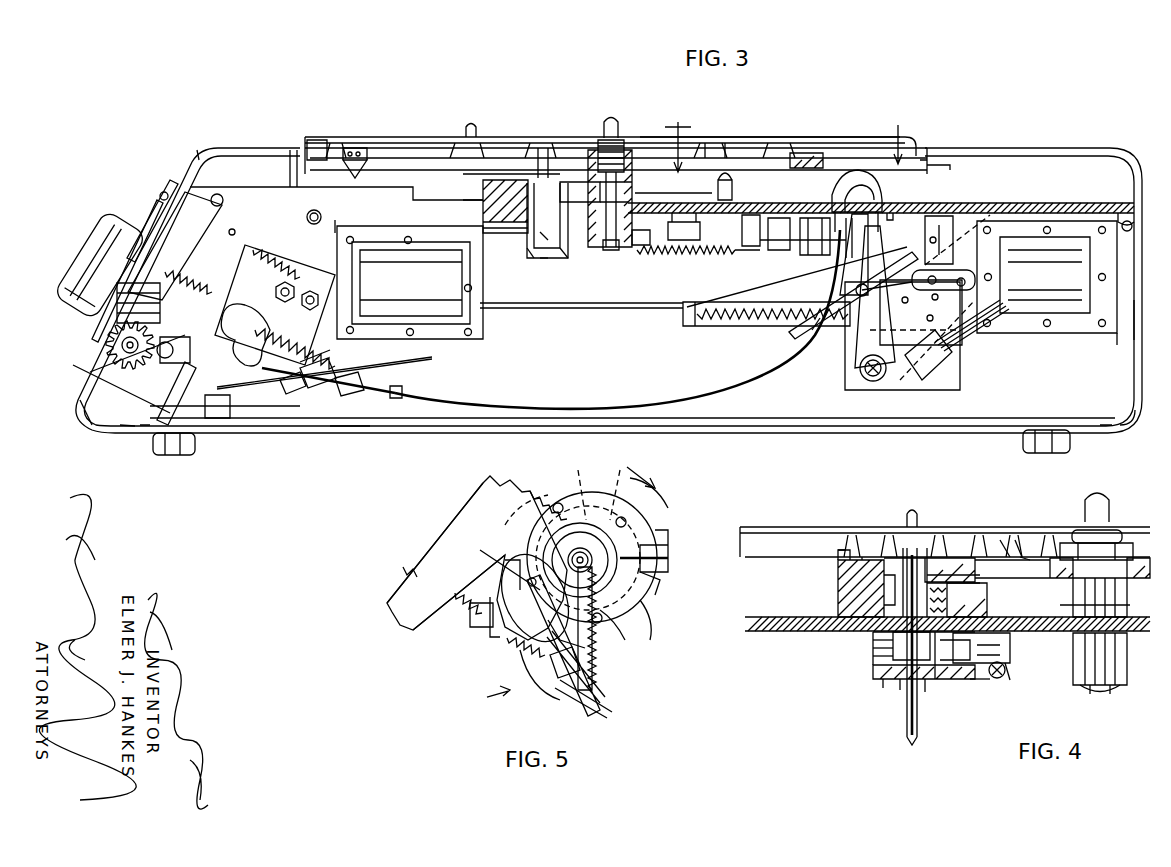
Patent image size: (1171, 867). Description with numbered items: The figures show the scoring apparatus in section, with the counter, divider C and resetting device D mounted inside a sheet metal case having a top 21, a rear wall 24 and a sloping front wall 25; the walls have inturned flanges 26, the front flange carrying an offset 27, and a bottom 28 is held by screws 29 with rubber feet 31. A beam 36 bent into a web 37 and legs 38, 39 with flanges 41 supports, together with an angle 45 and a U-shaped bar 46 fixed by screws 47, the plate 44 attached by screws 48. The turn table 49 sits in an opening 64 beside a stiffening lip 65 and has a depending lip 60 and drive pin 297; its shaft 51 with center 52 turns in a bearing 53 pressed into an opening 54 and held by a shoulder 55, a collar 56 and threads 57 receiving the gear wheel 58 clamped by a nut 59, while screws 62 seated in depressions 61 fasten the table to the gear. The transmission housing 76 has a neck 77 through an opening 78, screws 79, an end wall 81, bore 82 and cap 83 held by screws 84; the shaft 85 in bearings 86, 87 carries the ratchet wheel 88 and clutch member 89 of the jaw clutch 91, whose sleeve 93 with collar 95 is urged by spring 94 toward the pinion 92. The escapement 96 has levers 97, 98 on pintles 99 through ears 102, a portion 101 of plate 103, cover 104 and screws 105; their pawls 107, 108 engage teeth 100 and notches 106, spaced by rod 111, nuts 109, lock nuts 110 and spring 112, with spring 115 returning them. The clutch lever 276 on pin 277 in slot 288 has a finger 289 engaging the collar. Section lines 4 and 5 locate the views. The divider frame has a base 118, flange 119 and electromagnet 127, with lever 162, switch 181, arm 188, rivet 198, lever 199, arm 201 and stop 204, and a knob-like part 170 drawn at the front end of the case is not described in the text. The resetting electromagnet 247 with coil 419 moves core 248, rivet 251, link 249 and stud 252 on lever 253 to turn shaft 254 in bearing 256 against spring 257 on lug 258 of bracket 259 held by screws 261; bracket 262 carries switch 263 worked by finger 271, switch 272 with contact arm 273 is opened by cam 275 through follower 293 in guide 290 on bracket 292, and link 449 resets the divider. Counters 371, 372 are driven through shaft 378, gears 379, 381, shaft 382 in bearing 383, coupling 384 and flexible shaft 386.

In FIG. 3, the top 21 is at (233, 147).
In FIG. 3, the rear wall 24 is at (1142, 330).
In FIG. 3, the front wall 25 is at (147, 224).
In FIG. 3, the inturned flanges 26 is at (140, 431).
In FIG. 3, the offset 27 is at (80, 422).
In FIG. 3, the bottom 28 is at (346, 433).
In FIG. 3, the screws 29 is at (125, 433).
In FIG. 3, the rubber feet 31 is at (172, 450).
In FIG. 3, the beam 36 is at (566, 256).
In FIG. 3, the web 37 is at (556, 260).
In FIG. 3, the leg 38 is at (514, 155).
In FIG. 3, the leg 39 is at (541, 160).
In FIG. 3, the flanges 41 is at (488, 178).
In FIG. 3, the plate 44 is at (1040, 206).
In FIG. 4, the plate 44 is at (750, 632).
In FIG. 3, the angle 45 is at (1128, 232).
In FIG. 3, the U-shaped bar 46 is at (527, 258).
In FIG. 3, the screws 47 is at (541, 261).
In FIG. 3, the screws 48 is at (1123, 212).
In FIG. 3, the turn table 49 is at (790, 137).
In FIG. 4, the turn table 49 is at (770, 527).
In FIG. 4, the shaft 51 is at (1080, 660).
In FIG. 3, the center 52 is at (611, 118).
In FIG. 4, the center 52 is at (1100, 496).
In FIG. 3, the bearing 53 is at (604, 240).
In FIG. 4, the bearing 53 is at (1116, 684).
In FIG. 3, the opening 54 is at (634, 245).
In FIG. 4, the opening 54 is at (1070, 620).
In FIG. 3, the shoulder 55 is at (598, 191).
In FIG. 4, the shoulder 55 is at (1076, 604).
In FIG. 4, the collar 56 is at (1030, 558).
In FIG. 3, the threads 57 is at (622, 158).
In FIG. 4, the threads 57 is at (1085, 545).
In FIG. 3, the gear wheel 58 is at (418, 158).
In FIG. 5, the gear wheel 58 is at (518, 484).
In FIG. 4, the gear wheel 58 is at (990, 565).
In FIG. 3, the nut 59 is at (592, 150).
In FIG. 4, the nut 59 is at (1112, 540).
In FIG. 3, the lip 60 is at (318, 137).
In FIG. 4, the depressions 61 is at (1006, 548).
In FIG. 4, the screws 62 is at (1020, 548).
In FIG. 3, the opening 64 is at (926, 150).
In FIG. 3, the lip 65 is at (300, 150).
In FIG. 4, the housing 76 is at (838, 590).
In FIG. 4, the neck 77 is at (880, 664).
In FIG. 4, the opening 78 is at (874, 645).
In FIG. 4, the screws 79 is at (877, 652).
In FIG. 4, the end wall 81 is at (884, 686).
In FIG. 4, the bore 82 is at (848, 600).
In FIG. 5, the cap 83 is at (592, 490).
In FIG. 4, the cap 83 is at (864, 548).
In FIG. 4, the screws 84 is at (840, 550).
In FIG. 4, the shaft 85 is at (898, 684).
In FIG. 4, the bearing 86 is at (945, 668).
In FIG. 4, the bearing 87 is at (903, 548).
In FIG. 5, the ratchet wheel 88 is at (563, 484).
In FIG. 4, the ratchet wheel 88 is at (937, 688).
In FIG. 4, the member 89 is at (976, 591).
In FIG. 4, the jaw clutch 91 is at (968, 576).
In FIG. 5, the pinion 92 is at (610, 622).
In FIG. 4, the pinion 92 is at (940, 558).
In FIG. 4, the sleeve 93 is at (976, 606).
In FIG. 4, the compression coil spring 94 is at (872, 632).
In FIG. 3, the collar 95 is at (848, 172).
In FIG. 4, the collar 95 is at (848, 566).
In FIG. 5, the escapement 96 is at (455, 594).
In FIG. 4, the escapement 96 is at (1000, 682).
In FIG. 5, the lever 97 is at (506, 576).
In FIG. 5, the lever 98 is at (572, 652).
In FIG. 4, the lever 98 is at (1005, 672).
In FIG. 5, the pintles 99 is at (515, 560).
In FIG. 4, the pintles 99 is at (1008, 656).
In FIG. 5, the ratchet teeth 100 is at (658, 546).
In FIG. 4, the portion 101 is at (978, 683).
In FIG. 5, the ears 102 is at (510, 642).
In FIG. 4, the ears 102 is at (980, 650).
In FIG. 4, the plate 103 is at (880, 679).
In FIG. 4, the cover 104 is at (926, 692).
In FIG. 4, the screws 105 is at (903, 690).
In FIG. 5, the notches 106 is at (620, 482).
In FIG. 5, the pawl 107 is at (655, 598).
In FIG. 5, the pawl 108 is at (535, 520).
In FIG. 5, the nuts 109 is at (488, 626).
In FIG. 5, the lock nuts 110 is at (470, 613).
In FIG. 5, the threaded rod 111 is at (602, 702).
In FIG. 5, the compression coil spring 112 is at (546, 688).
In FIG. 3, the spring 115 is at (713, 253).
In FIG. 5, the spring 115 is at (403, 568).
In FIG. 3, the base 118 is at (395, 232).
In FIG. 3, the flange 119 is at (272, 196).
In FIG. 3, the electromagnet 127 is at (480, 312).
In FIG. 3, the lever 162 is at (168, 212).
In FIG. 3, the knob 170 is at (100, 252).
In FIG. 3, the switch 181 is at (291, 388).
In FIG. 3, the arm 188 is at (178, 190).
In FIG. 3, the rivet 198 is at (234, 330).
In FIG. 3, the lever 199 is at (243, 262).
In FIG. 3, the arm 201 is at (216, 402).
In FIG. 3, the stop 204 is at (252, 348).
In FIG. 3, the electromagnet 247 is at (1062, 336).
In FIG. 3, the core 248 is at (1010, 262).
In FIG. 3, the link 249 is at (850, 332).
In FIG. 3, the rivet 251 is at (940, 256).
In FIG. 3, the stud 252 is at (862, 284).
In FIG. 3, the lever 253 is at (814, 322).
In FIG. 3, the shaft 254 is at (855, 388).
In FIG. 3, the bearing 256 is at (952, 390).
In FIG. 3, the tension coil spring 257 is at (762, 303).
In FIG. 3, the lug 258 is at (683, 316).
In FIG. 3, the bracket 259 is at (718, 327).
In FIG. 3, the screws 261 is at (912, 335).
In FIG. 3, the bracket 262 is at (1012, 280).
In FIG. 3, the resetting switch 263 is at (992, 350).
In FIG. 3, the finger 271 is at (882, 380).
In FIG. 3, the switch 272 is at (691, 254).
In FIG. 3, the fixed contact arm 273 is at (668, 244).
In FIG. 3, the cam 275 is at (362, 158).
In FIG. 3, the lever 276 is at (880, 240).
In FIG. 5, the lever 276 is at (668, 560).
In FIG. 3, the screw 277 is at (884, 186).
In FIG. 5, the screw 277 is at (660, 522).
In FIG. 5, the slot 288 is at (658, 578).
In FIG. 3, the finger 289 is at (860, 183).
In FIG. 3, the guide 290 is at (683, 187).
In FIG. 3, the bracket 292 is at (768, 228).
In FIG. 3, the cam follower 293 is at (714, 143).
In FIG. 3, the drive pin 297 is at (470, 124).
In FIG. 4, the drive pin 297 is at (912, 508).
In FIG. 3, the totaling counter 371 is at (162, 190).
In FIG. 3, the totaling counter 372 is at (97, 367).
In FIG. 3, the operating shaft 378 is at (107, 340).
In FIG. 3, the beveled gear 379 is at (116, 349).
In FIG. 3, the beveled gear 381 is at (150, 380).
In FIG. 3, the counter shaft 382 is at (344, 388).
In FIG. 3, the bearing 383 is at (190, 380).
In FIG. 3, the coupling 384 is at (403, 392).
In FIG. 3, the flexible shaft 386 is at (638, 404).
In FIG. 4, the flexible shaft 386 is at (912, 746).
In FIG. 3, the coil 419 is at (1068, 322).
In FIG. 3, the link 449 is at (398, 355).
In FIG. 5, the section line 4- 4 is at (576, 589).
In FIG. 3, the section line 5- 5 is at (787, 158).
In FIG. 3, the assembly A is at (198, 152).
In FIG. 3, the divider C is at (300, 266).
In FIG. 3, the resetting device D is at (1118, 340).